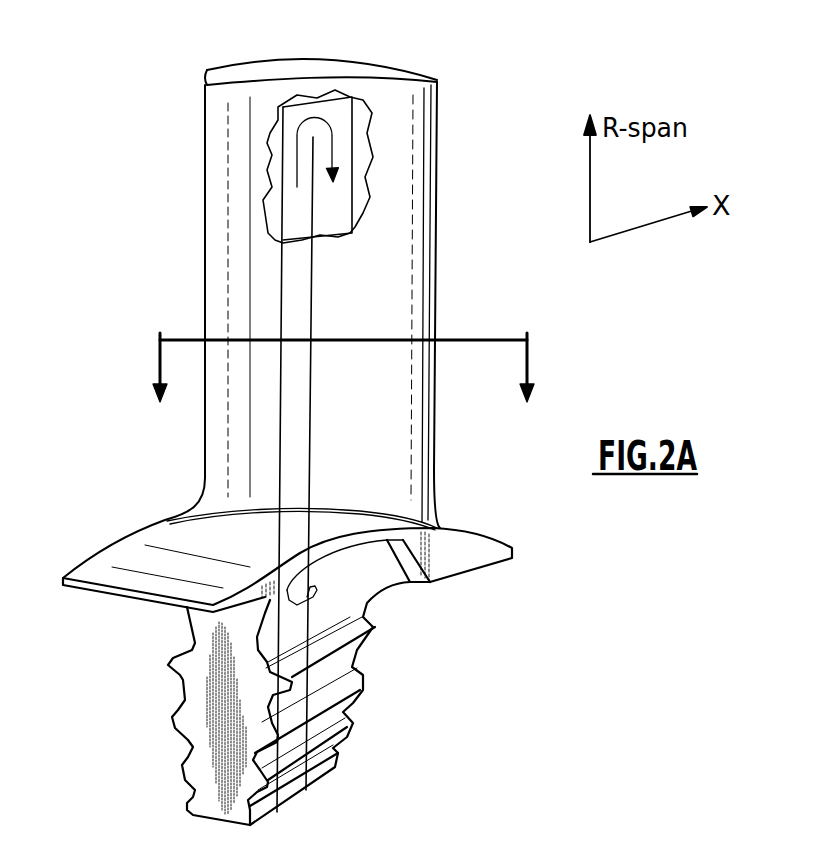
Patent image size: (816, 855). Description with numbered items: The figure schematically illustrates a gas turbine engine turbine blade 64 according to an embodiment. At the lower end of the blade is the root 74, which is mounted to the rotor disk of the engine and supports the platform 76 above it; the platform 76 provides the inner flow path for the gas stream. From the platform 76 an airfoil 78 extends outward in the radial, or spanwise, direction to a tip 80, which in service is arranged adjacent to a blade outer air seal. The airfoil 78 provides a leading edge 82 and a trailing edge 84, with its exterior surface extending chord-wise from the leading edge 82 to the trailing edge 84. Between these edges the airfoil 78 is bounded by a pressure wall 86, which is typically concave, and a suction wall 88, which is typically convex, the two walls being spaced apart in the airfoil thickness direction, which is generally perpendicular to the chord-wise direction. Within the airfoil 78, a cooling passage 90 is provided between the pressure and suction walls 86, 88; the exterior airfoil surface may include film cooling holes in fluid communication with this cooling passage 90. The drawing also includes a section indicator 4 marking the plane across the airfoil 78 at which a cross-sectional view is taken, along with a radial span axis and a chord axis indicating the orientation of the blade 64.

The section line 4- 4 is at (344, 367).
The turbine blade 64 is at (163, 247).
The root 74 is at (213, 718).
The platform 76 is at (327, 528).
The airfoil 78 is at (385, 396).
The tip 80 is at (226, 68).
The leading edge 82 is at (204, 250).
The trailing edge 84 is at (436, 236).
The pressure wall 86 is at (353, 300).
The suction wall 88 is at (354, 50).
The cooling passage 90 is at (376, 176).